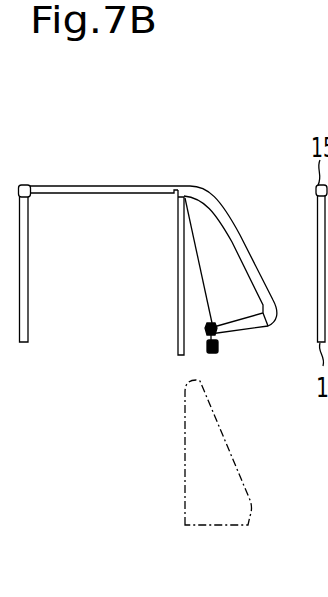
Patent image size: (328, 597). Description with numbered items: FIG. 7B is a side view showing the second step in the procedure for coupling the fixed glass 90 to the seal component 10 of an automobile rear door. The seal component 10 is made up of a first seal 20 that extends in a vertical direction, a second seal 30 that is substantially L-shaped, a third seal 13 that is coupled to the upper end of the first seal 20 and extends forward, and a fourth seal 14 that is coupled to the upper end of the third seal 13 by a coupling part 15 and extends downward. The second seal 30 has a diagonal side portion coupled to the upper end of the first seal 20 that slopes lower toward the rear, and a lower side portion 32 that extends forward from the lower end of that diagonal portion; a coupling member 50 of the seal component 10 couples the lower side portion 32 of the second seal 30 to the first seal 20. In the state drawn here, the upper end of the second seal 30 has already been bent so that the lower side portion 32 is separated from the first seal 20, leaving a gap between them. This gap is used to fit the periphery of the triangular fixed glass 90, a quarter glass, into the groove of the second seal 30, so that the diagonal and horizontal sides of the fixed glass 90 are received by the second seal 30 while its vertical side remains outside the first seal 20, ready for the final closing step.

The seal component 10 is at (147, 178).
The third seal 13 is at (97, 185).
The fourth seal 14 is at (23, 343).
The coupling part 15 is at (25, 184).
The first seal 20 is at (177, 266).
The second seal 30 is at (224, 222).
The lower side portion 32 is at (253, 329).
The coupling member 50 is at (218, 351).
The fixed glass 90 is at (225, 271).